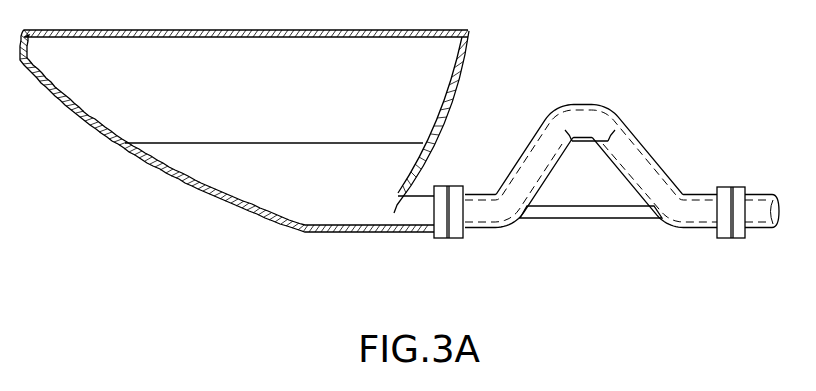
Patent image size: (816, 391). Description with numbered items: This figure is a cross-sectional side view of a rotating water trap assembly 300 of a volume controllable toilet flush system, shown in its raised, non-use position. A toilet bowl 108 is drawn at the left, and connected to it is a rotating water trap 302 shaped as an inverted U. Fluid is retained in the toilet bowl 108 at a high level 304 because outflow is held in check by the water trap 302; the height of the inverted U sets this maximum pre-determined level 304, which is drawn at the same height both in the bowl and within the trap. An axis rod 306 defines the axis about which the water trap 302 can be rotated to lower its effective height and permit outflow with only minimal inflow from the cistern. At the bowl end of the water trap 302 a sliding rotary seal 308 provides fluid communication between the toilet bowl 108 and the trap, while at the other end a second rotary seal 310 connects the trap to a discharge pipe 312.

The toilet bowl 108 is at (465, 53).
The rotating water trap assembly 300 is at (627, 74).
The rotating water trap 302 is at (665, 159).
The high level 304 is at (233, 143).
The axis rod 306 is at (597, 215).
The sliding rotary seal 308 is at (452, 238).
The second rotary seal 310 is at (737, 236).
The discharge pipe 312 is at (767, 206).